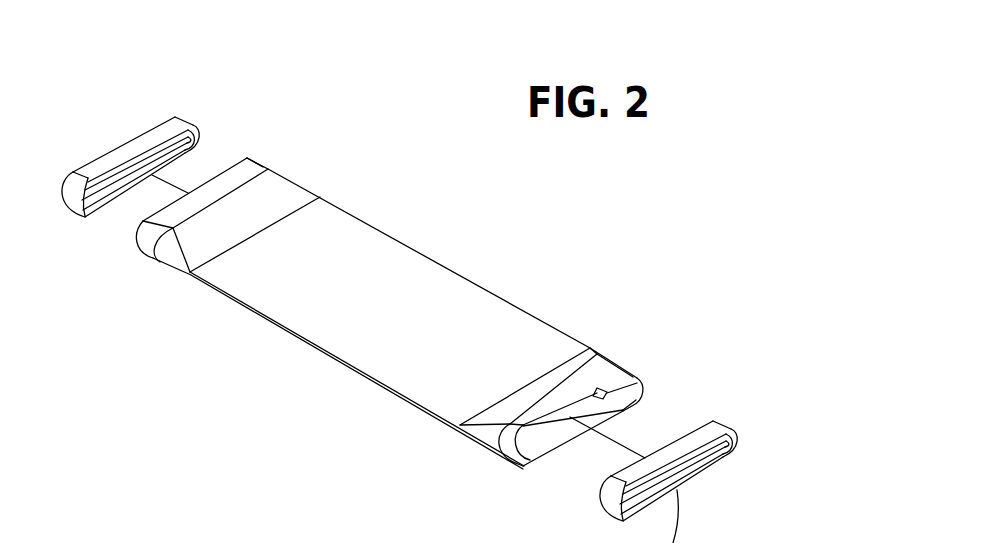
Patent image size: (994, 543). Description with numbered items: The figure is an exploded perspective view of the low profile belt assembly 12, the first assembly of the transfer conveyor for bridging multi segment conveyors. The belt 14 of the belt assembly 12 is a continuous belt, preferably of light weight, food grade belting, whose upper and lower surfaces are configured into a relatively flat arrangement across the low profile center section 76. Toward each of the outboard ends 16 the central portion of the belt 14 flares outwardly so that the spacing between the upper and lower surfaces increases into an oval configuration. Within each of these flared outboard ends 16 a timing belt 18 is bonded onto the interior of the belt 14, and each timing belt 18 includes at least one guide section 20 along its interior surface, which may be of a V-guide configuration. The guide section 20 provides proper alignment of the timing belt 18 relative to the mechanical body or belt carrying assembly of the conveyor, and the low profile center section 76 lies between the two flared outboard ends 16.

The low profile belt assembly 12 is at (124, 128).
The belt 14 is at (533, 310).
The outboard ends 16 is at (617, 367).
The timing belt 18 is at (194, 124).
The guide section 20 is at (717, 468).
The low profile center section 76 is at (440, 253).